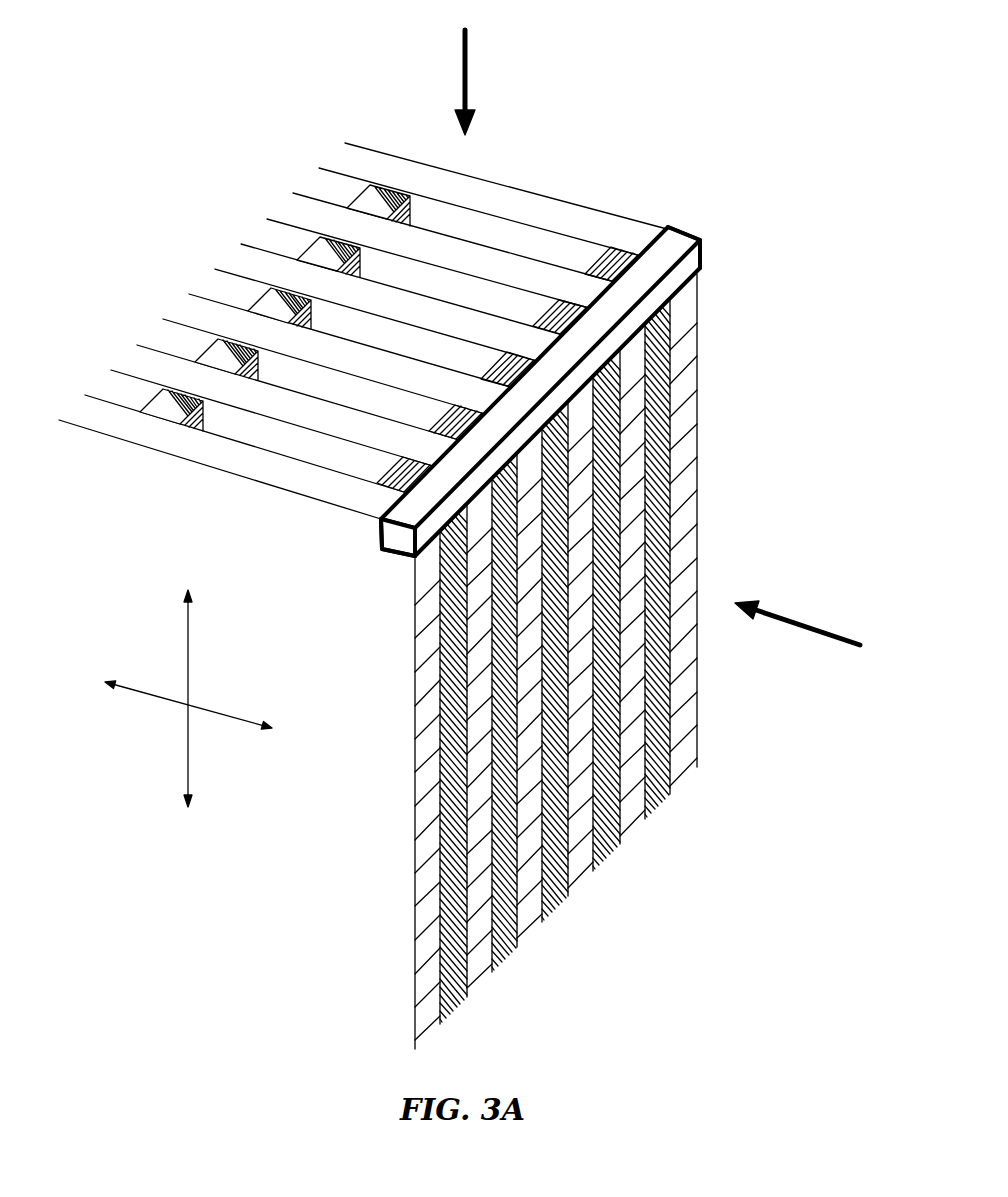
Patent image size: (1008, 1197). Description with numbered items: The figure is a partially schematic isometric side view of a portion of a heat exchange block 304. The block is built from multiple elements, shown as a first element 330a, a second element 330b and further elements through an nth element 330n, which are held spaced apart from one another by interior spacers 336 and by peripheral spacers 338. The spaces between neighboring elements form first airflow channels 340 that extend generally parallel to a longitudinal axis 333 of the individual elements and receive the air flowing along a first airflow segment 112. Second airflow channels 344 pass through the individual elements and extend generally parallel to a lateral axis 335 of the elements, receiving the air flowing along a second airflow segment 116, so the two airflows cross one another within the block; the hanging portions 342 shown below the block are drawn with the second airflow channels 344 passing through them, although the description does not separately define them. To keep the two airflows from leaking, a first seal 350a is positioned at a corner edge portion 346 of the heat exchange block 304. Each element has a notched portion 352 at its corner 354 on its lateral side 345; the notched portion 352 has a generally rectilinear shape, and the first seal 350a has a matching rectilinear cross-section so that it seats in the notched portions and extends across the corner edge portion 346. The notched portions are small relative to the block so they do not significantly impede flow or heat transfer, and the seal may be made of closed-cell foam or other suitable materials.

The first airflow segment 112 is at (481, 60).
The second airflow segment 116 is at (821, 632).
The heat exchange block 304 is at (88, 205).
The element 330a is at (71, 400).
The element 330b is at (131, 351).
The element 330n is at (347, 143).
The longitudinal axis 333 is at (198, 641).
The lateral axis 335 is at (226, 690).
The interior spacer 336 is at (156, 402).
The peripheral spacer 338 is at (614, 250).
The first airflow channel 340 is at (280, 366).
The hanging strips 342 is at (583, 770).
The second airflow channel 344 is at (420, 683).
The lateral side 345 is at (795, 490).
The corner edge portion 346 is at (678, 188).
The first seal 350a is at (712, 251).
The notched portion 352 is at (392, 557).
The corner 354 is at (347, 537).